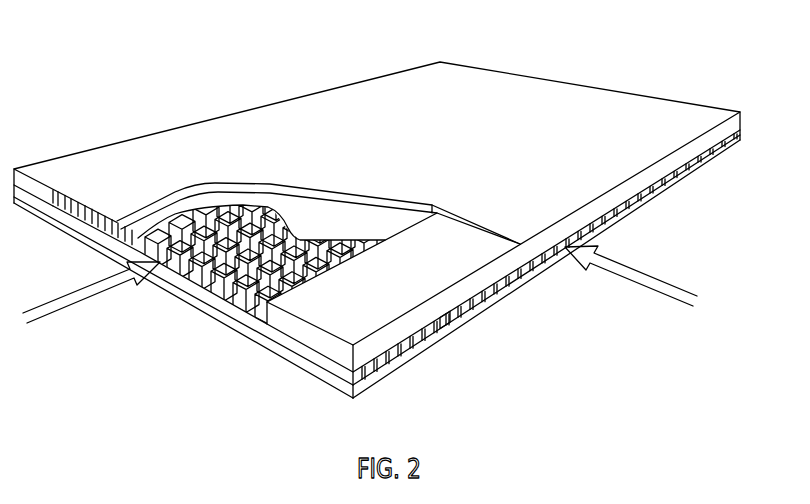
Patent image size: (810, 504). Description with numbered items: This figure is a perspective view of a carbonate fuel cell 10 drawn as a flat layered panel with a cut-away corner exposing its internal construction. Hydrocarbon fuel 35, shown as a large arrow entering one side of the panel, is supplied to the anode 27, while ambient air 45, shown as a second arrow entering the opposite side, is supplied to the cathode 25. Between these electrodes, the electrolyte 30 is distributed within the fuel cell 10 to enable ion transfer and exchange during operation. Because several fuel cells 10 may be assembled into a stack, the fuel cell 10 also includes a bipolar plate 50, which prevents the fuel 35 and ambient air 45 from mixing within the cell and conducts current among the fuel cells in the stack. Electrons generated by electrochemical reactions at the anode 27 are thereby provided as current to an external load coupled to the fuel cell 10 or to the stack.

The fuel cell 10 is at (744, 109).
The electrolyte 30 is at (388, 103).
The anode 27 is at (320, 214).
The cathode 25 is at (497, 298).
The bipolar plate 50 is at (446, 330).
The hydrocarbon fuel 35 is at (118, 284).
The ambient air 45 is at (637, 290).